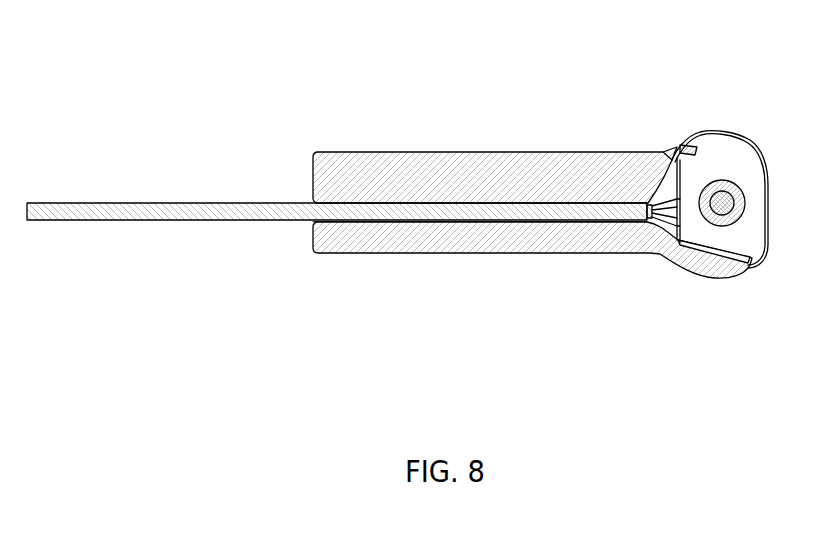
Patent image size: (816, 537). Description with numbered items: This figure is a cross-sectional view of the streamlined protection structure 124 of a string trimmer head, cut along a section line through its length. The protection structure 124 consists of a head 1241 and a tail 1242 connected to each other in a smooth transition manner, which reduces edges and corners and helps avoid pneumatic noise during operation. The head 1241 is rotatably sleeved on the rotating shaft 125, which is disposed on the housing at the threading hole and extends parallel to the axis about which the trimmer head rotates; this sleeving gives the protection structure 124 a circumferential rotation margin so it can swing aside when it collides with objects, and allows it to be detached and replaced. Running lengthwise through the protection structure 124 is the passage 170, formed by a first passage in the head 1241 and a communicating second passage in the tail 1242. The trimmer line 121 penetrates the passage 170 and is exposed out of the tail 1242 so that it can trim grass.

The trimmer line 121 is at (180, 201).
The protection structure 124 is at (554, 145).
The head 1241 is at (713, 143).
The tail 1242 is at (583, 158).
The rotating shaft 125 is at (732, 190).
The passage 170 is at (387, 222).